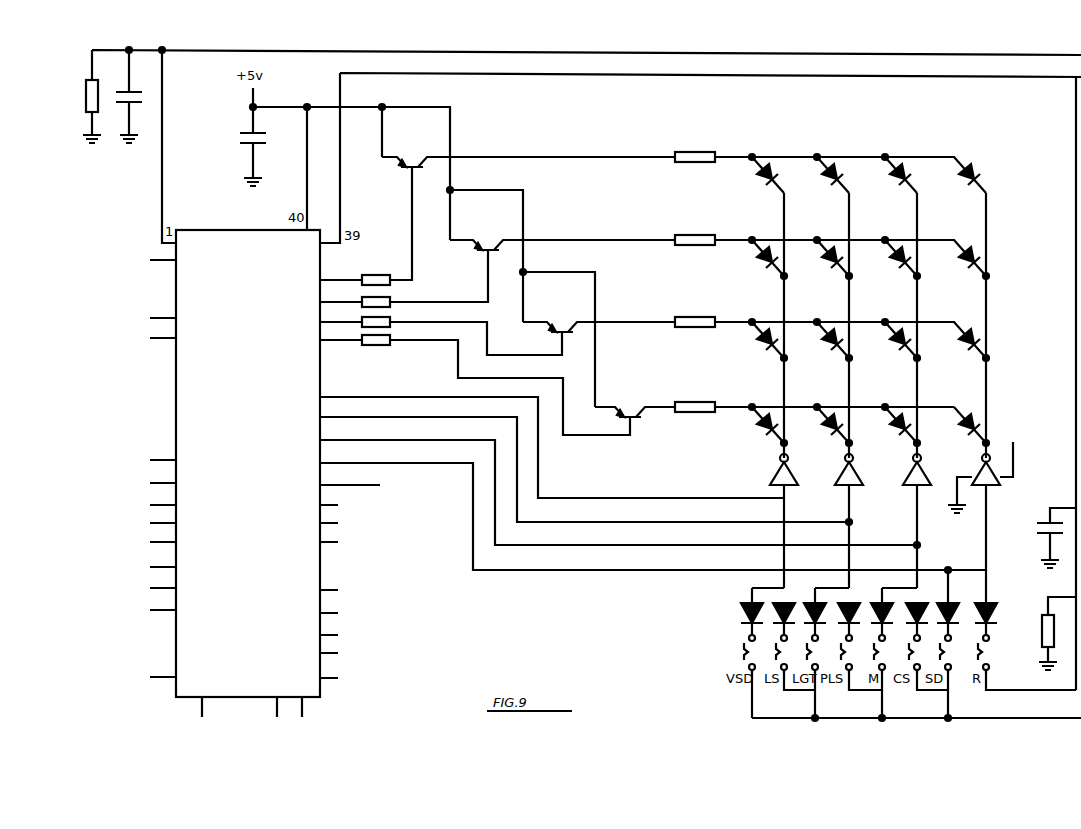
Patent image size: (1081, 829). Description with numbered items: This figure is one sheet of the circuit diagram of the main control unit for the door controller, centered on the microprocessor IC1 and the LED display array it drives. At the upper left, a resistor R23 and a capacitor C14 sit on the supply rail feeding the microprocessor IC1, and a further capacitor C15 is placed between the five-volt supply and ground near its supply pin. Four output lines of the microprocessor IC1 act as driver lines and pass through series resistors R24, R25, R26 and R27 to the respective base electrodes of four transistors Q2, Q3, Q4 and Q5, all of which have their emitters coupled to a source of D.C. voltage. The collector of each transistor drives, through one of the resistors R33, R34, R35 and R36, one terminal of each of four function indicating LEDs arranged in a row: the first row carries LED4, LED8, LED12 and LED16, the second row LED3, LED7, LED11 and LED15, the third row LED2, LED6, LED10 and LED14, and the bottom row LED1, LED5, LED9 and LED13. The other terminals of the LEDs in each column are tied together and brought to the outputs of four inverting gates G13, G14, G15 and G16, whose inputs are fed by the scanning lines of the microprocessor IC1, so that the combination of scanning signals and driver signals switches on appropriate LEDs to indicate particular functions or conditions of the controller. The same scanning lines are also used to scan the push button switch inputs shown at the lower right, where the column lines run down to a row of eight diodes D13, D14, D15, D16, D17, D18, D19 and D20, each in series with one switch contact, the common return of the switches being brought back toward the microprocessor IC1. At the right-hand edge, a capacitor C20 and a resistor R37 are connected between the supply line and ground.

The microprocessor IC1 is at (245, 473).
The resistor R23 is at (103, 111).
The capacitor C14 is at (136, 117).
The capacitor C15 is at (262, 159).
The resistor R24 is at (366, 226).
The resistor R25 is at (404, 278).
The resistor R26 is at (441, 331).
The resistor R27 is at (475, 380).
The transistor Q2 is at (412, 154).
The transistor Q3 is at (488, 236).
The transistor Q4 is at (562, 319).
The transistor Q5 is at (630, 404).
The resistor R33 is at (815, 150).
The resistor R34 is at (815, 232).
The resistor R35 is at (815, 314).
The resistor R36 is at (814, 399).
The function indicating LED LED1 is at (758, 431).
The function indicating LED LED2 is at (755, 346).
The function indicating LED LED3 is at (755, 264).
The function indicating LED LED4 is at (755, 181).
The function indicating LED LED5 is at (823, 431).
The function indicating LED LED6 is at (823, 346).
The function indicating LED LED7 is at (823, 264).
The function indicating LED LED8 is at (823, 181).
The function indicating LED LED9 is at (888, 431).
The function indicating LED LED10 is at (887, 346).
The function indicating LED LED11 is at (888, 264).
The function indicating LED LED12 is at (887, 181).
The function indicating LED LED13 is at (955, 431).
The light emitting diode LED14 is at (955, 346).
The light emitting diode LED15 is at (955, 264).
The light emitting diode LED16 is at (955, 181).
The inverting gate G13 is at (793, 521).
The inverting gate G14 is at (858, 521).
The inverting gate G15 is at (925, 521).
The inverting gate G16 is at (986, 514).
The diode D13 is at (742, 652).
The diode D14 is at (794, 639).
The diode D15 is at (825, 646).
The diode D16 is at (860, 639).
The diode D17 is at (890, 646).
The diode D18 is at (927, 639).
The diode D19 is at (958, 653).
The diode D20 is at (1025, 639).
The capacitor C20 is at (1044, 538).
The resistor R37 is at (1043, 633).